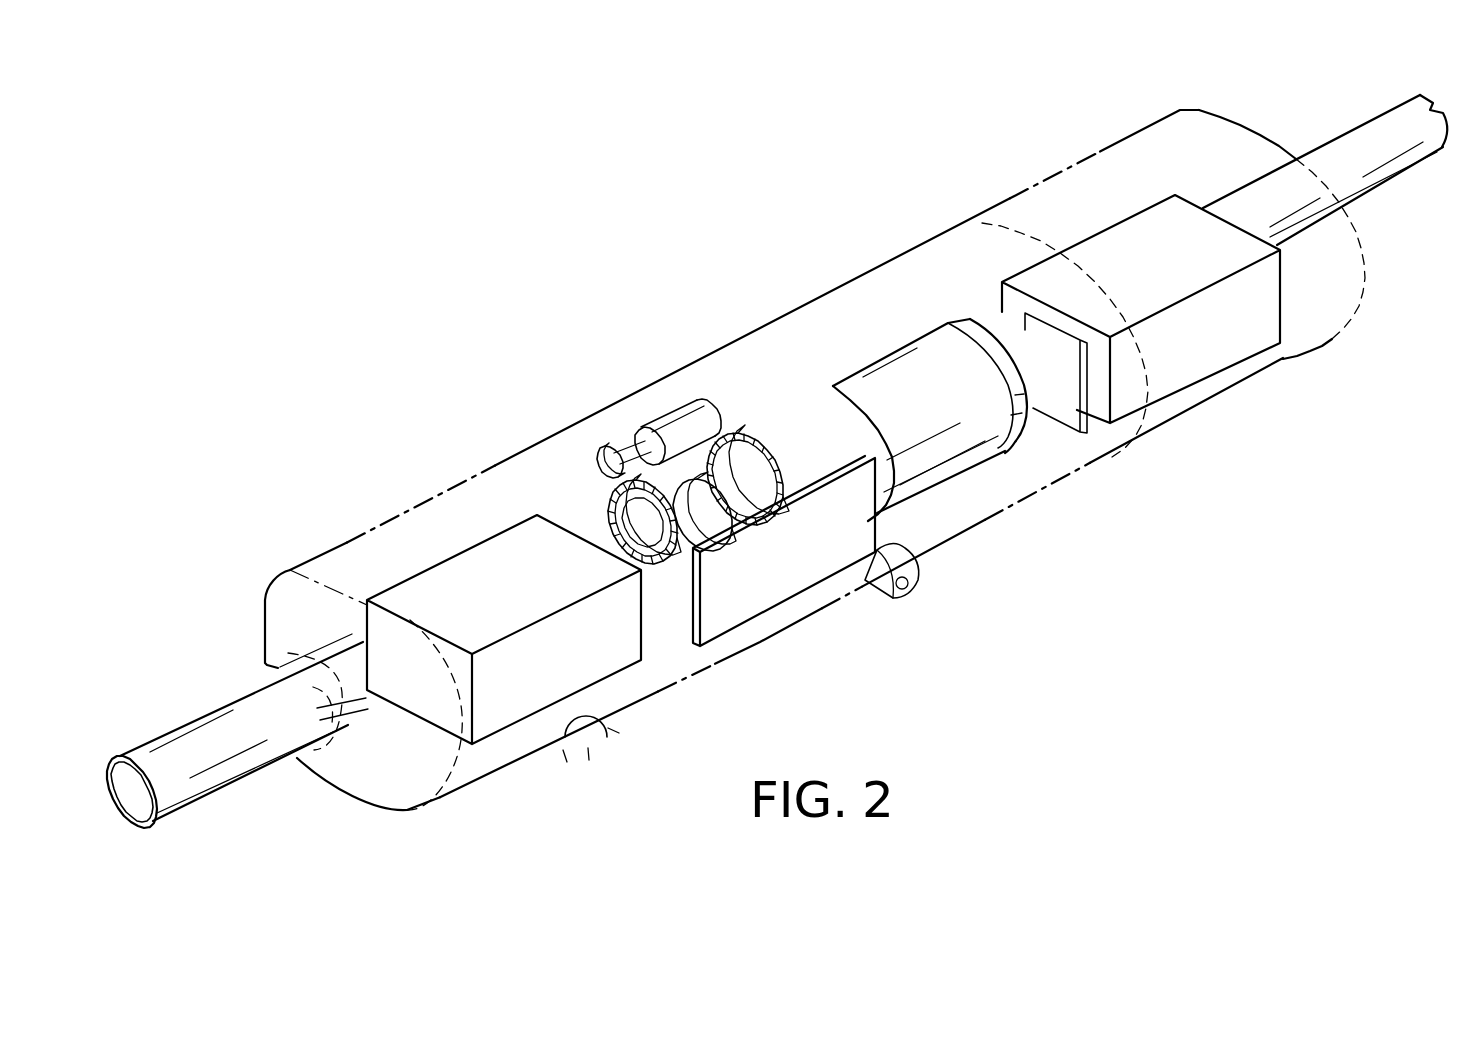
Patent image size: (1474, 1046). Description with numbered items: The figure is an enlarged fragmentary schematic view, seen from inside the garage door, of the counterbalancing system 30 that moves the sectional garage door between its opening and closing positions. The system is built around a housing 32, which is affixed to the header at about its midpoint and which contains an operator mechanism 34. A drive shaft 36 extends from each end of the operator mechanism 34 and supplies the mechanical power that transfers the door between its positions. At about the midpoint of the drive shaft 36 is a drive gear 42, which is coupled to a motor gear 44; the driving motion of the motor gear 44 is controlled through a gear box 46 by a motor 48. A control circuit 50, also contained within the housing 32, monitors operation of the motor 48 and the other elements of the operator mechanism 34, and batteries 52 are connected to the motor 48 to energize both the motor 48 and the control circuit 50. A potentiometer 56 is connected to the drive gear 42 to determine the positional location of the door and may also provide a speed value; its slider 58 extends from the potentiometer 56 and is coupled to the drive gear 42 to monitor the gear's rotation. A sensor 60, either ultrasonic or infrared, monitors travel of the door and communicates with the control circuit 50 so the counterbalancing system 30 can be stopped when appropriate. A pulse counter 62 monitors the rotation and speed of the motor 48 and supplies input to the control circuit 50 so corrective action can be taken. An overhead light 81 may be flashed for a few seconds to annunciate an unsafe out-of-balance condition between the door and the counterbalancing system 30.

The counterbalancing system 30 is at (714, 200).
The housing 32 is at (1223, 400).
The operator mechanism 34 is at (953, 511).
The drive shaft 36 is at (197, 790).
The drive gear 42 is at (650, 463).
The motor gear 44 is at (743, 463).
The gear box 46 is at (790, 417).
The motor 48 is at (977, 452).
The control circuit 50 is at (745, 615).
The batteries 52 is at (515, 712).
The potentiometer 56 is at (679, 396).
The slider 58 is at (603, 457).
The sensor 60 is at (894, 614).
The pulse counter 62 is at (1073, 420).
The overhead light 81 is at (595, 738).